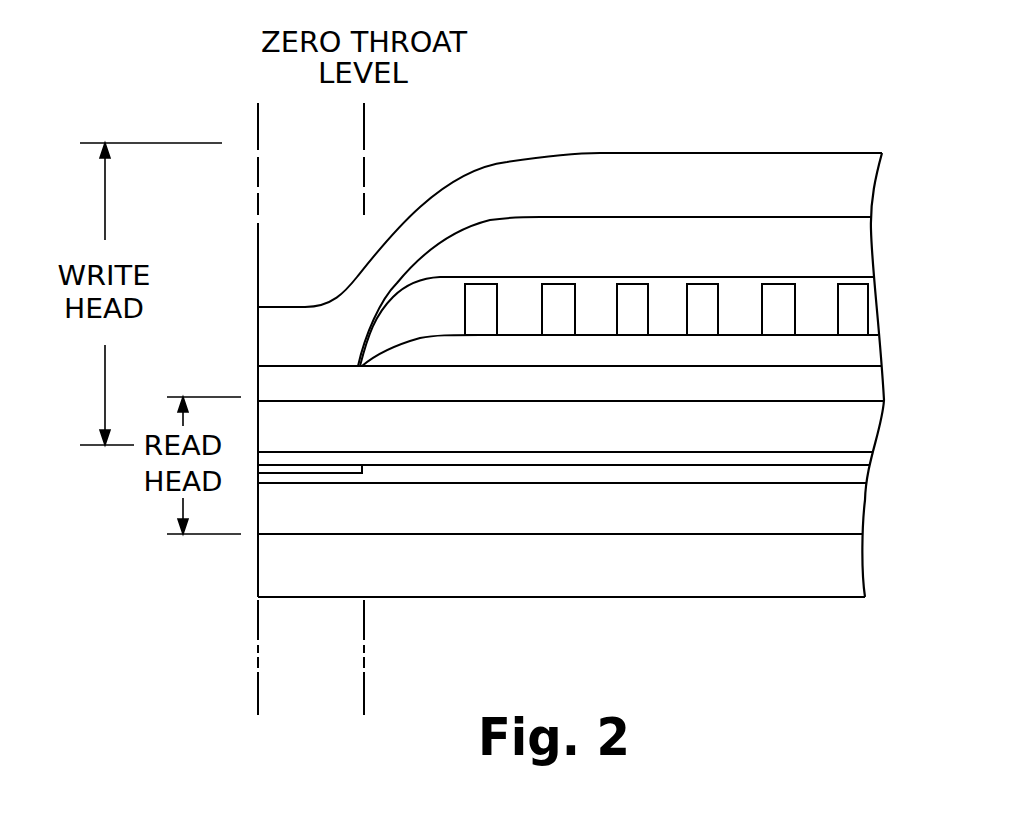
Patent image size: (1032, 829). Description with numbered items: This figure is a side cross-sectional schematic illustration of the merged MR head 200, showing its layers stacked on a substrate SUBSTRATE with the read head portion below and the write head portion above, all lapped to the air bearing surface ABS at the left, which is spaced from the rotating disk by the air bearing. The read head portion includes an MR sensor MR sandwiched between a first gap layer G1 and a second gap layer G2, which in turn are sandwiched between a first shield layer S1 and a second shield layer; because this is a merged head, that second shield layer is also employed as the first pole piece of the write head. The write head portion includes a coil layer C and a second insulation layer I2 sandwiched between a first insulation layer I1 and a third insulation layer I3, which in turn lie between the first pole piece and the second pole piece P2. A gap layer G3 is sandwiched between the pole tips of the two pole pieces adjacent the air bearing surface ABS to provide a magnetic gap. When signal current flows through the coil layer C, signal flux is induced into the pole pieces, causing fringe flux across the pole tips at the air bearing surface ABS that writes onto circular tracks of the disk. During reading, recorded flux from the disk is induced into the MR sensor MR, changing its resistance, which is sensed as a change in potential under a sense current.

The merged MR head 200 is at (743, 78).
The second pole piece P2 is at (570, 259).
The third insulation layer I3 is at (616, 299).
The second insulation layer I2 is at (620, 329).
The coil layer C is at (666, 309).
The first insulation layer I1 is at (570, 350).
The gap layer G3 is at (571, 385).
The second gap layer G2 is at (885, 457).
The MR sensor MR is at (278, 447).
The first gap layer G1 is at (880, 479).
The first shield layer S1 is at (560, 515).
The substrate SUBSTRATE is at (561, 575).
The air bearing surface ABS is at (258, 162).